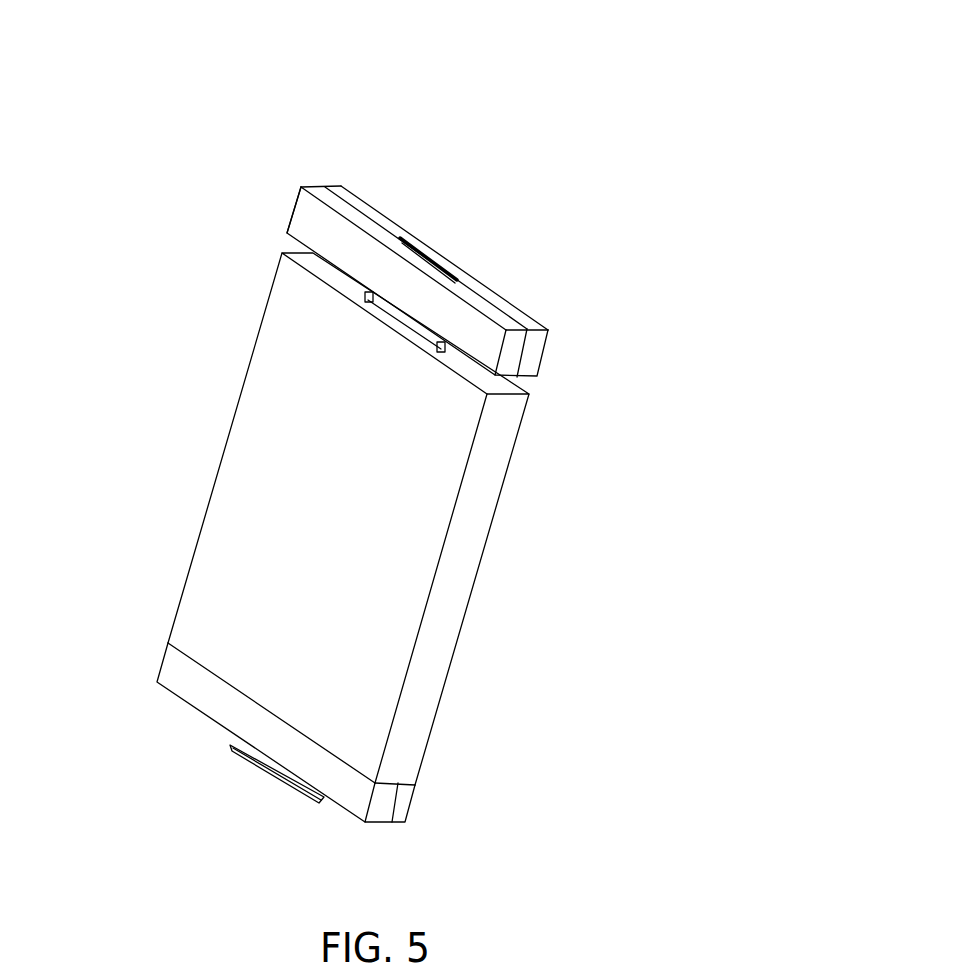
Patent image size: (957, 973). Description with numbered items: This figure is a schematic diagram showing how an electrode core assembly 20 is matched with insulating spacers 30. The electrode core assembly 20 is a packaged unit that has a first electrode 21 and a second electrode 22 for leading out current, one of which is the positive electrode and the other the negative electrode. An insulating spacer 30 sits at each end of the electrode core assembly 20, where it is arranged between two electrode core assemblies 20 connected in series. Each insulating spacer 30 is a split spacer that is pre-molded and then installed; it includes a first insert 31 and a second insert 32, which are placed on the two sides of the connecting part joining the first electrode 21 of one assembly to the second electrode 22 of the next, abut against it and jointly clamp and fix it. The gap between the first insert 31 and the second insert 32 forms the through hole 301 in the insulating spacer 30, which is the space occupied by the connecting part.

The electrode core assembly 20 is at (245, 488).
The first electrode 21 is at (266, 773).
The second electrode 22 is at (370, 292).
The insulating spacer 30 is at (493, 290).
The through hole 301 is at (408, 240).
The first insert 31 is at (308, 218).
The second insert 32 is at (528, 357).